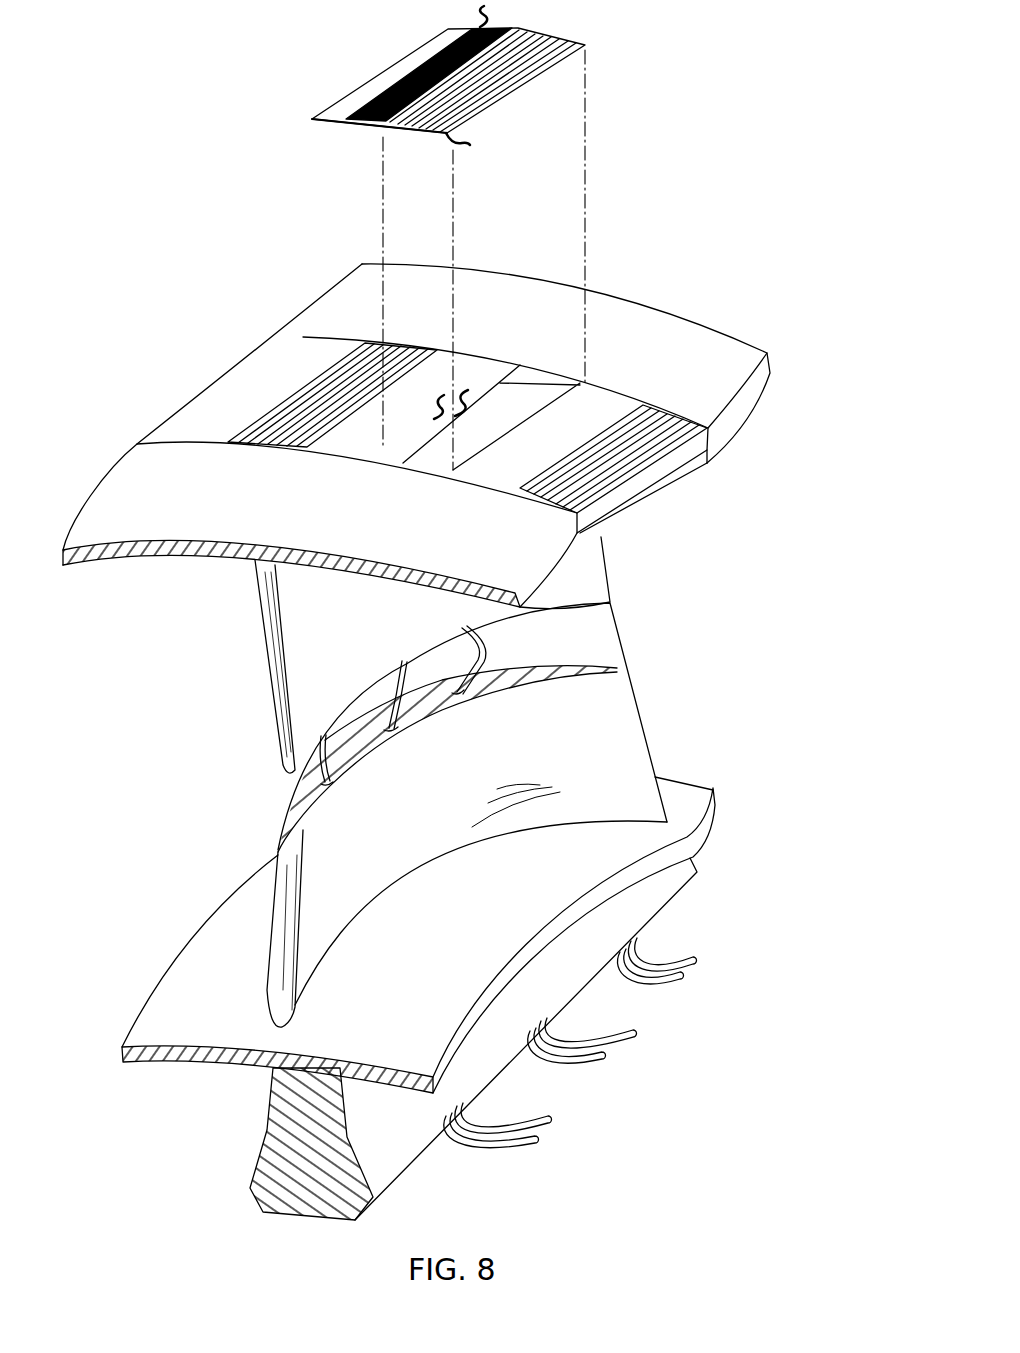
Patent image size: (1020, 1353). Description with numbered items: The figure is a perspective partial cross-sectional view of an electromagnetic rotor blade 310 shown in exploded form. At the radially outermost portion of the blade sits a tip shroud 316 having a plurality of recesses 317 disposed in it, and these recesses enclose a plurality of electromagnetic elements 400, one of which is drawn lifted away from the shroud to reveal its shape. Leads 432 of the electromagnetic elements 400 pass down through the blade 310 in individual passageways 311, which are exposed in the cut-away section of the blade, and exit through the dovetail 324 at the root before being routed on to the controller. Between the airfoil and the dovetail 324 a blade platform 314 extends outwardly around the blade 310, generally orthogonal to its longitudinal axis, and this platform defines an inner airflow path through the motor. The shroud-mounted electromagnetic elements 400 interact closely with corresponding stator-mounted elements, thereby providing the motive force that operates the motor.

The rotor blade 310 is at (620, 720).
The passageways 311 is at (397, 727).
The blade platform 314 is at (690, 785).
The tip shroud 316 is at (740, 355).
The recesses 317 is at (555, 390).
The dovetail 324 is at (280, 1152).
The electromagnetic elements 400 is at (547, 58).
The leads 432 is at (465, 390).